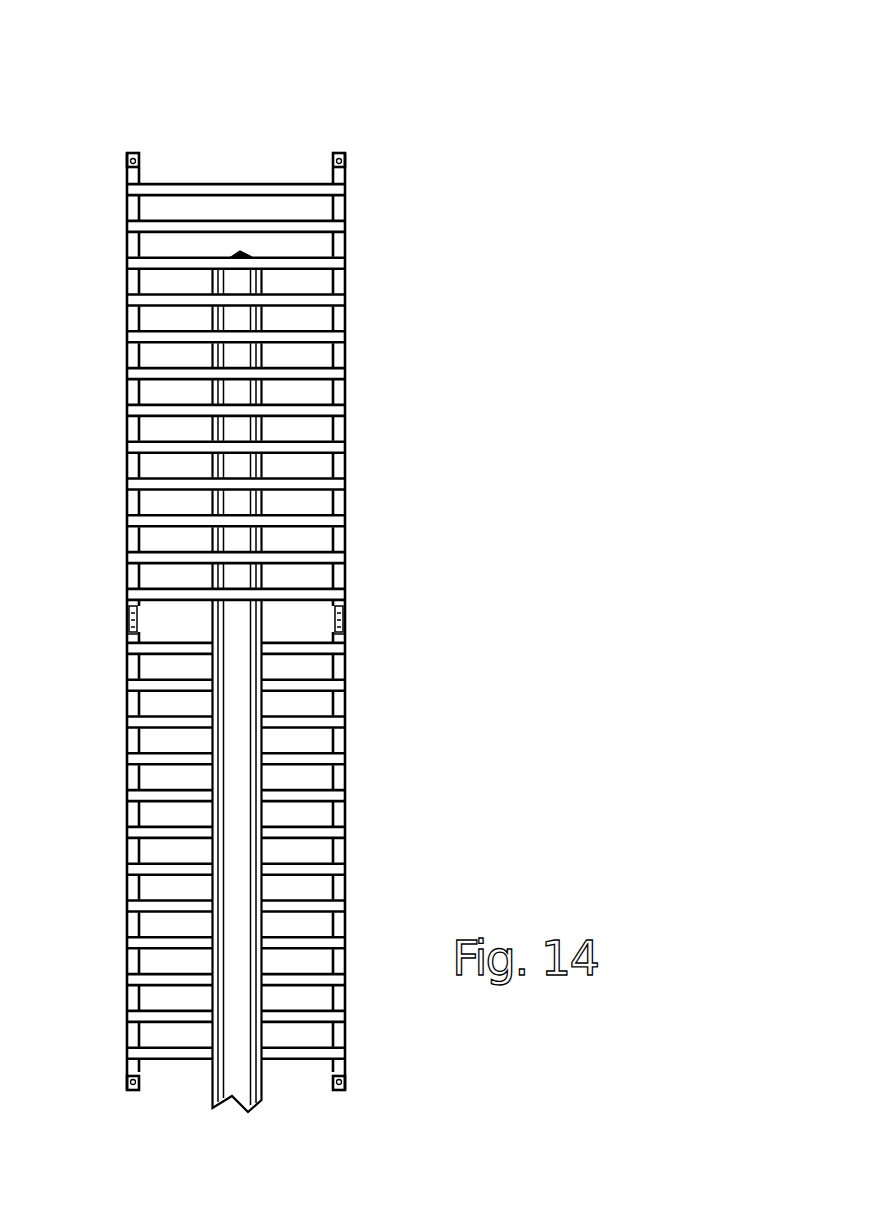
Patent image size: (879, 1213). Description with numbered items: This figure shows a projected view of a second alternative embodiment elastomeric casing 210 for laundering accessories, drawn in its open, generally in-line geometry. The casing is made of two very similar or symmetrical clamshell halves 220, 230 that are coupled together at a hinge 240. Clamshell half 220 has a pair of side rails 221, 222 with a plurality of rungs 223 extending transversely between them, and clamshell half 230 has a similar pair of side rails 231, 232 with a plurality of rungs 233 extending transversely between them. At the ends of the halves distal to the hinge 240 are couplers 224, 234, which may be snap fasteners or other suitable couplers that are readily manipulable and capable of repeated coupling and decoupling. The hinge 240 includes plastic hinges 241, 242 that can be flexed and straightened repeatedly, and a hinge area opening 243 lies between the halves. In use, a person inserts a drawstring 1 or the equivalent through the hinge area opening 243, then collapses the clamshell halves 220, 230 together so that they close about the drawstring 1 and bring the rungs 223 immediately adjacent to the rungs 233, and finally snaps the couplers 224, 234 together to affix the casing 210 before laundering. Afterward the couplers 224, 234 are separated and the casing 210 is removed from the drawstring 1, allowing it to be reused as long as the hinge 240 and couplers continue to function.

The second alternative embodiment elastomeric casing 210 is at (287, 615).
The clamshell half 220 is at (226, 351).
The side rail 221 is at (341, 283).
The side rail 222 is at (138, 285).
The rungs 223 is at (342, 373).
The coupler 224 is at (141, 158).
The clamshell half 230 is at (223, 900).
The side rail 231 is at (341, 816).
The side rail 232 is at (138, 817).
The rungs 233 is at (342, 727).
The coupler 234 is at (141, 1085).
The hinge 240 is at (249, 611).
The plastic hinge 241 is at (352, 634).
The plastic hinge 242 is at (127, 622).
The hinge area opening 243 is at (300, 620).
The drawstring 1 is at (247, 851).